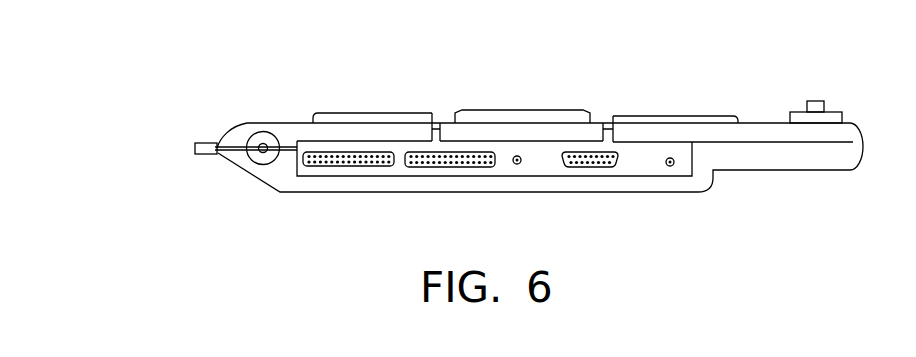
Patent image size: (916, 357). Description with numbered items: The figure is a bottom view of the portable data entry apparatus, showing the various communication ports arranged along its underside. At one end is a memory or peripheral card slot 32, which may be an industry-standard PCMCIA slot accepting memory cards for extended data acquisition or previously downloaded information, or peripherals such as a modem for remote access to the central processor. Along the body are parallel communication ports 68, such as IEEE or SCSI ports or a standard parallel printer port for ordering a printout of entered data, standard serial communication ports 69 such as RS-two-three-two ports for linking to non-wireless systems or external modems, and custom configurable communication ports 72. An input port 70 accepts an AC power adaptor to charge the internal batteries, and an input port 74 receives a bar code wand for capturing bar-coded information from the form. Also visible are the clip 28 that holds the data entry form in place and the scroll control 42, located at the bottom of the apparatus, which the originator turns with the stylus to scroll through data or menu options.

The clip 28 is at (653, 115).
The memory or peripheral card slot 32 is at (215, 155).
The scroll control 42 is at (825, 104).
The parallel communication ports 68 is at (333, 167).
The serial communication ports 69 is at (428, 167).
The input port 70 is at (517, 164).
The custom configurable communication ports 72 is at (590, 167).
The input port 74 is at (671, 167).